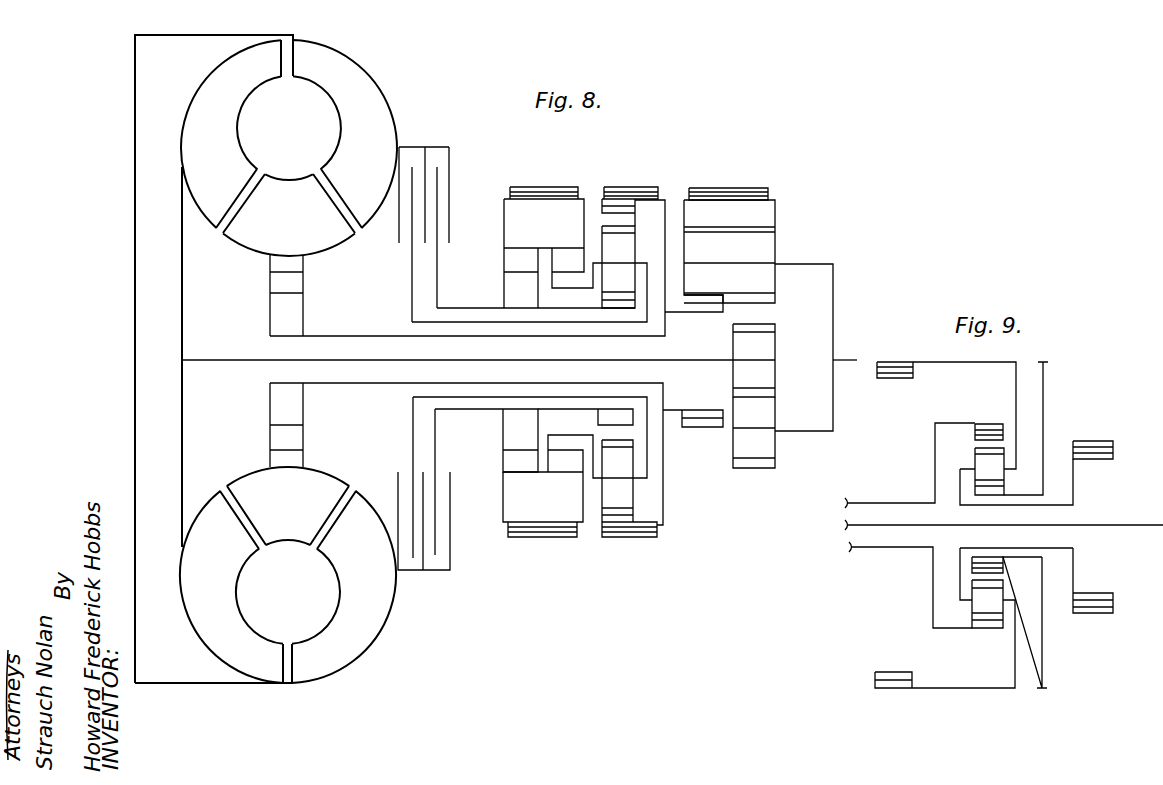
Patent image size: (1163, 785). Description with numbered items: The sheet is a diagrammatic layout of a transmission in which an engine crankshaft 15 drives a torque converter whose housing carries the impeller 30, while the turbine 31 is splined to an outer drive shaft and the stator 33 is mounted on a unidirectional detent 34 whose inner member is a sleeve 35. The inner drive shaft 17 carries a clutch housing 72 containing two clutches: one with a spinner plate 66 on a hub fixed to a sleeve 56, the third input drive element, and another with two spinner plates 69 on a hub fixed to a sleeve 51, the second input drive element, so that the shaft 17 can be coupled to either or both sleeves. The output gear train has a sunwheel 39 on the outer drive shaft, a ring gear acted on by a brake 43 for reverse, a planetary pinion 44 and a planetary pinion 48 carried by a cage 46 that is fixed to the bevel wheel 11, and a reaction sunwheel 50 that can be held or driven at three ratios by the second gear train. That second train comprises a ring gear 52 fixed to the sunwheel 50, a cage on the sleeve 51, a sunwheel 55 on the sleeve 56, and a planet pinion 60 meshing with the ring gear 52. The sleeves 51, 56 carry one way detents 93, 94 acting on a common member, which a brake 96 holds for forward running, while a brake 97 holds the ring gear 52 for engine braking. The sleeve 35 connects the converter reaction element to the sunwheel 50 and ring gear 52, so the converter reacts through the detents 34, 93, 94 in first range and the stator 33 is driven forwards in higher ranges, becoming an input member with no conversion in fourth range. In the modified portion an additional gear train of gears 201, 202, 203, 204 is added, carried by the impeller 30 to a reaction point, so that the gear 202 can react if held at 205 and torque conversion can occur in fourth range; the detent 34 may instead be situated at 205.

In FIG. 8, the bevel wheel 11 is at (848, 365).
In FIG. 8, the engine crankshaft 15 is at (135, 357).
In FIG. 8, the inner drive shaft 17 is at (238, 360).
In FIG. 8, the impeller 30 is at (362, 90).
In FIG. 8, the turbine 31 is at (200, 118).
In FIG. 8, the stator 33 is at (262, 232).
In FIG. 8, the unidirectional detent 34 is at (296, 283).
In FIG. 8, the sleeve 35 is at (354, 336).
In FIG. 9, the sleeve 35 is at (868, 503).
In FIG. 8, the sunwheel 39 is at (760, 341).
In FIG. 8, the brake 43 is at (728, 187).
In FIG. 8, the planetary pinion 44 is at (741, 452).
In FIG. 8, the cage 46 is at (834, 302).
In FIG. 8, the planetary pinion 48 is at (762, 248).
In FIG. 8, the sunwheel 50 is at (703, 305).
In FIG. 9, the sunwheel 50 is at (1100, 459).
In FIG. 8, the sleeve 51 is at (413, 400).
In FIG. 8, the ring gear 52 is at (625, 212).
In FIG. 9, the ring gear 52 is at (890, 370).
In FIG. 8, the sunwheel 55 is at (612, 418).
In FIG. 8, the sleeve 56 is at (473, 405).
In FIG. 8, the planet pinion 60 is at (610, 498).
In FIG. 8, the spinner plate 66 is at (440, 175).
In FIG. 8, the spinner plates 69 is at (428, 153).
In FIG. 8, the clutch housing 72 is at (408, 147).
In FIG. 8, the one way detent 93 is at (510, 458).
In FIG. 8, the one way detent 94 is at (562, 462).
In FIG. 8, the brake 96 is at (537, 190).
In FIG. 8, the brake 97 is at (620, 197).
In FIG. 9, the gear 201 is at (982, 428).
In FIG. 9, the gear 202 is at (975, 568).
In FIG. 9, the gear 203 is at (978, 464).
In FIG. 9, the gear 204 is at (980, 605).
In FIG. 9, the reaction point 205 is at (1044, 398).